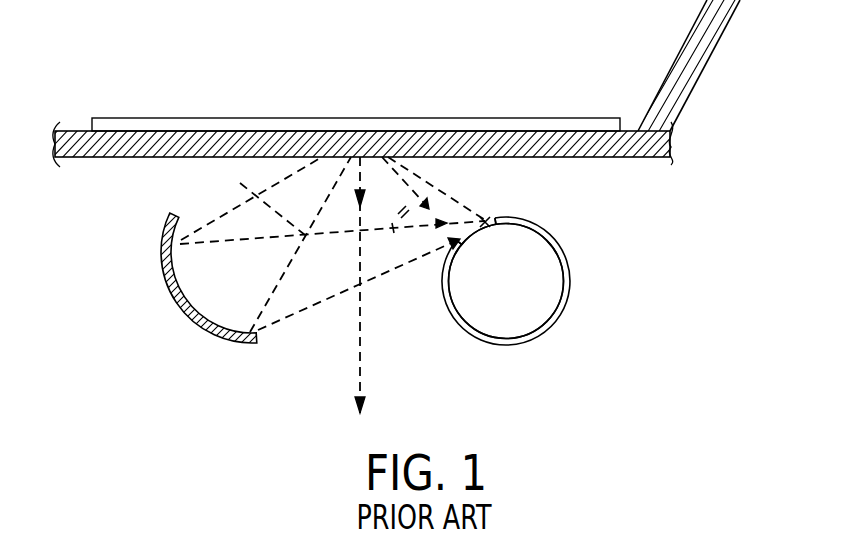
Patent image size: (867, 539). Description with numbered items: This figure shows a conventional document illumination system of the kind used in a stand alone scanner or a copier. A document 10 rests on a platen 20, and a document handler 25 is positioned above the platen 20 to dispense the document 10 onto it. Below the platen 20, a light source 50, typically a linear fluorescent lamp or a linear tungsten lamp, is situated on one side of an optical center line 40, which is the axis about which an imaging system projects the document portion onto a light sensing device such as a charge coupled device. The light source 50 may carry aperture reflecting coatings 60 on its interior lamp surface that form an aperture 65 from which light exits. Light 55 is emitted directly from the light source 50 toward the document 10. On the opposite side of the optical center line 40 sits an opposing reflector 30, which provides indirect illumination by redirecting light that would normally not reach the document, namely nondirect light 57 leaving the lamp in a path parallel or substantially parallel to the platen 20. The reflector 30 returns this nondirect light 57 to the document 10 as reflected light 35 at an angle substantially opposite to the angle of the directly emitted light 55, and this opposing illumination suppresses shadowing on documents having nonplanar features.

The document 10 is at (555, 118).
The platen 20 is at (664, 158).
The document handler 25 is at (717, 43).
The opposing reflector 30 is at (160, 264).
The reflected light 35 is at (236, 181).
The optical center line 40 is at (369, 352).
The light source 50 is at (553, 238).
The light emitted directly toward the document 55 is at (332, 209).
The nondirect light 57 is at (319, 304).
The aperture reflecting coatings 60 is at (530, 330).
The aperture 65 is at (485, 221).